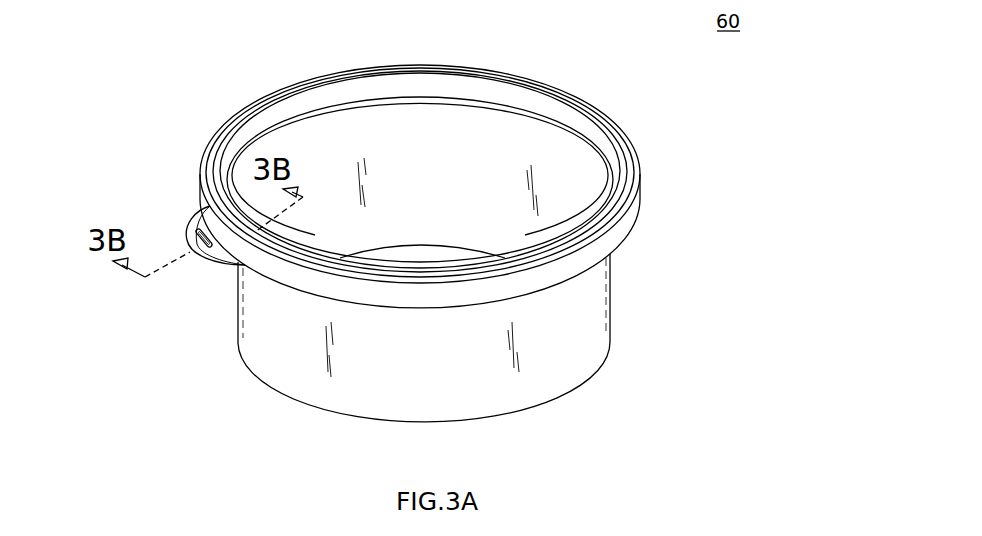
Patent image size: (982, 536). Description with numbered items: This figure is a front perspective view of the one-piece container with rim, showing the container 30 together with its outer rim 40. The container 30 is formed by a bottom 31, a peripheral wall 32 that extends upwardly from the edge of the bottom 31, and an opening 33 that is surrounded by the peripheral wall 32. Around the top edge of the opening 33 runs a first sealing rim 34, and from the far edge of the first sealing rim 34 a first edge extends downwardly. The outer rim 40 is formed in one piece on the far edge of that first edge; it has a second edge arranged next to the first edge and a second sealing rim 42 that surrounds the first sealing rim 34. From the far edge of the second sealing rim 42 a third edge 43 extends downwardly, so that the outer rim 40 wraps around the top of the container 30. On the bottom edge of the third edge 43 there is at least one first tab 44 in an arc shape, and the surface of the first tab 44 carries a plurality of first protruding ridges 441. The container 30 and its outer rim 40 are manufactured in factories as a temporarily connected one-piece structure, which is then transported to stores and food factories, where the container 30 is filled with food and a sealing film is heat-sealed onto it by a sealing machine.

The container 30 is at (467, 346).
The bottom 31 is at (540, 410).
The peripheral wall 32 is at (612, 298).
The opening 33 is at (461, 131).
The first sealing rim 34 is at (580, 112).
The outer rim 40 is at (423, 160).
The second sealing rim 42 is at (632, 160).
The third edge 43 is at (640, 222).
The first tab 44 is at (173, 196).
The first protruding ridges 441 is at (193, 230).